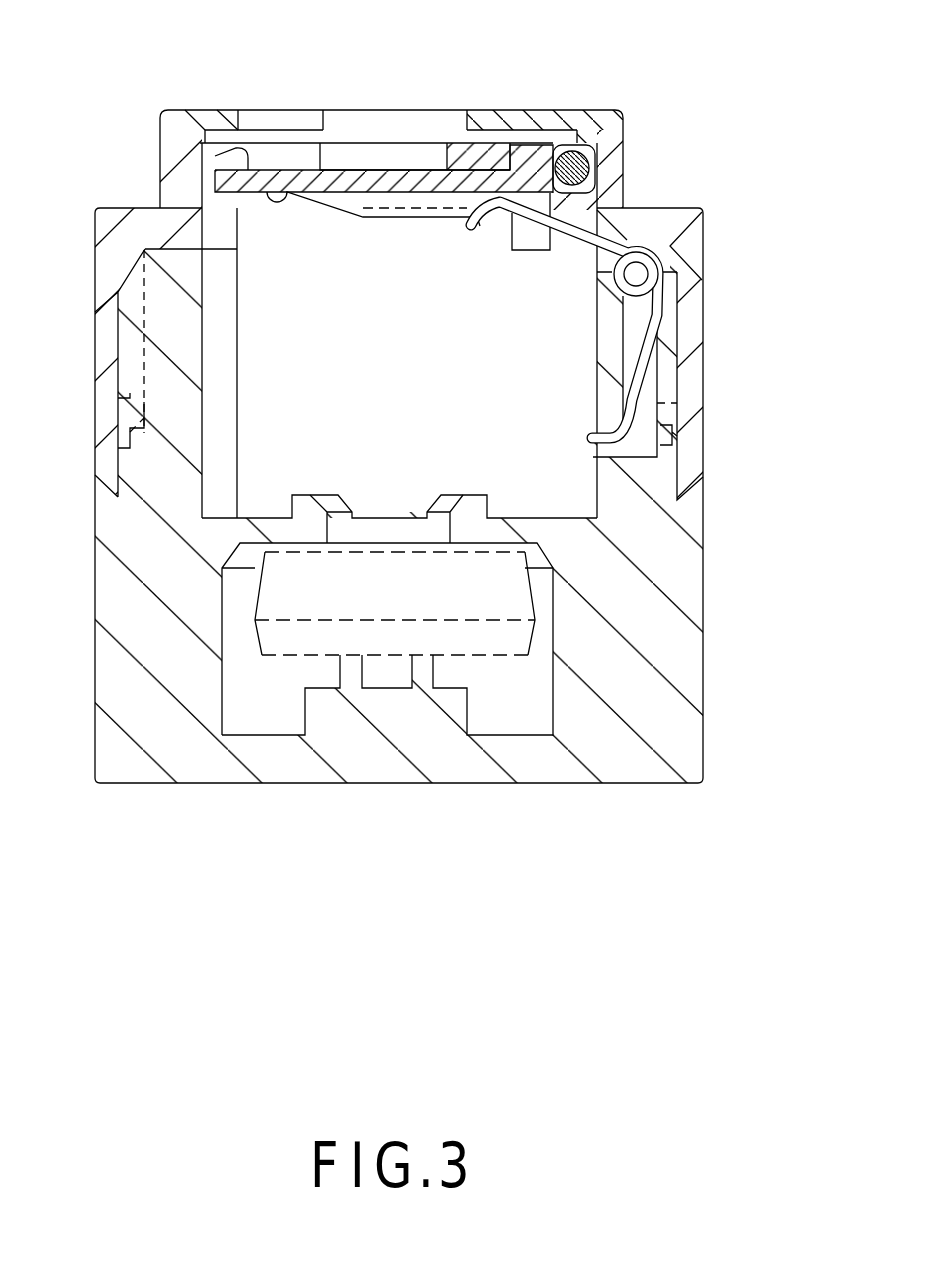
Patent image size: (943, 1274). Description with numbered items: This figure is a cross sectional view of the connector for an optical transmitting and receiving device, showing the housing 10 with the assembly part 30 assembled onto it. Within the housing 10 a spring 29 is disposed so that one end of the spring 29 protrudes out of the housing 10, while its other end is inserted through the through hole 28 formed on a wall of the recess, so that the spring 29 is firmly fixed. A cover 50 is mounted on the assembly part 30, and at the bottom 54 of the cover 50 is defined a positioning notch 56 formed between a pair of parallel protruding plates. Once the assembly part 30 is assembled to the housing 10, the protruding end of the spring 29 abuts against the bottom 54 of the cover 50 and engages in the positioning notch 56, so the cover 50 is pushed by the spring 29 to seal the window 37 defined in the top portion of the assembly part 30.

The housing 10 is at (703, 620).
The through hole 28 is at (623, 450).
The spring 29 is at (640, 340).
The assembly part 30 is at (645, 154).
The window 37 is at (340, 130).
The cover 50 is at (487, 170).
The bottom 54 is at (272, 185).
The positioning notch 56 is at (390, 168).